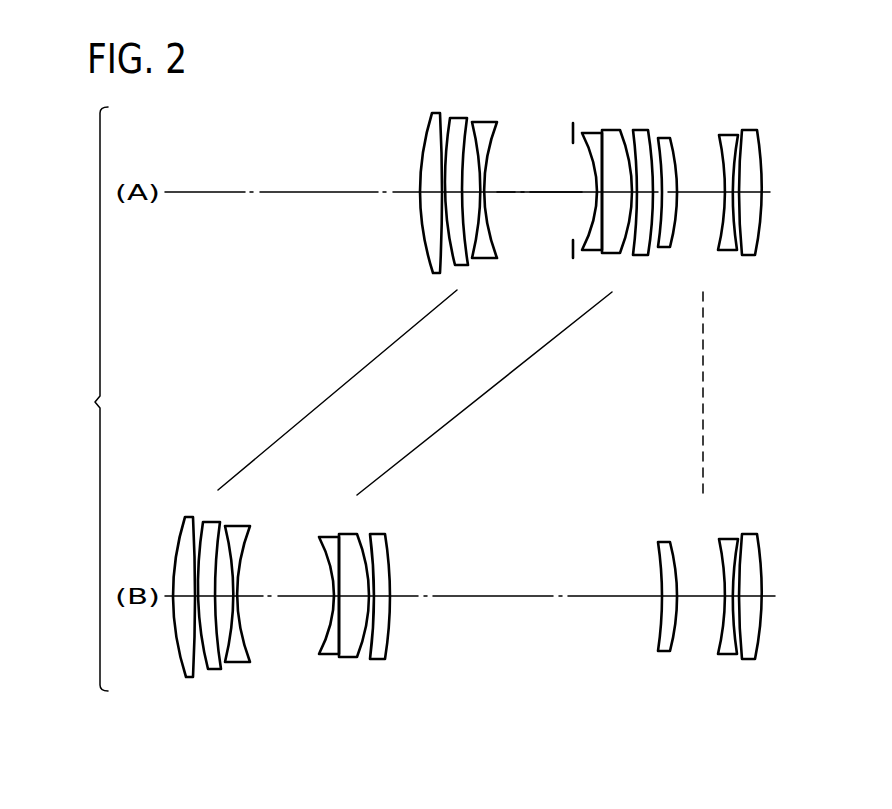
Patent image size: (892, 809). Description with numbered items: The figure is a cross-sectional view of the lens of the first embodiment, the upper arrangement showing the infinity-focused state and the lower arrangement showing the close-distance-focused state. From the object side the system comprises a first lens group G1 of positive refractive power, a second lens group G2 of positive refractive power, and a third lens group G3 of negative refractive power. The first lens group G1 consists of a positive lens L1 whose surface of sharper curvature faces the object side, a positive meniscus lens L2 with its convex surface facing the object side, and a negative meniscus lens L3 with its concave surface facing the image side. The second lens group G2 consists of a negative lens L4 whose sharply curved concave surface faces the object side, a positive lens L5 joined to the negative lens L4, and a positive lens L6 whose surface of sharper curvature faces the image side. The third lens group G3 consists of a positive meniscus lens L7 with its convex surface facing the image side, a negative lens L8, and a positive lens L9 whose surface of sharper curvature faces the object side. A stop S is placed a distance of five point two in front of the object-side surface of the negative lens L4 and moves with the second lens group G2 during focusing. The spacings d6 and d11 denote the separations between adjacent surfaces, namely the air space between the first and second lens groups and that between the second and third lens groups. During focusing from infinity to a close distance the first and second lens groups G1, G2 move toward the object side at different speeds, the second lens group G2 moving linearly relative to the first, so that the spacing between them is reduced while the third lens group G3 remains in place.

The first lens group G1 is at (507, 71).
The second lens group G2 is at (645, 73).
The third lens group G3 is at (782, 69).
The positive lens L1 is at (428, 133).
The positive meniscus lens L2 is at (452, 117).
The negative meniscus lens L3 is at (485, 120).
The negative lens L4 is at (582, 133).
The positive lens L5 is at (601, 130).
The positive lens L6 is at (640, 128).
The positive meniscus lens L7 is at (673, 137).
The negative lens L8 is at (728, 134).
The positive lens L9 is at (752, 130).
The stop S is at (570, 136).
The air space between first and second lens groups d6 is at (541, 195).
The air space between second and third lens groups d11 is at (659, 197).